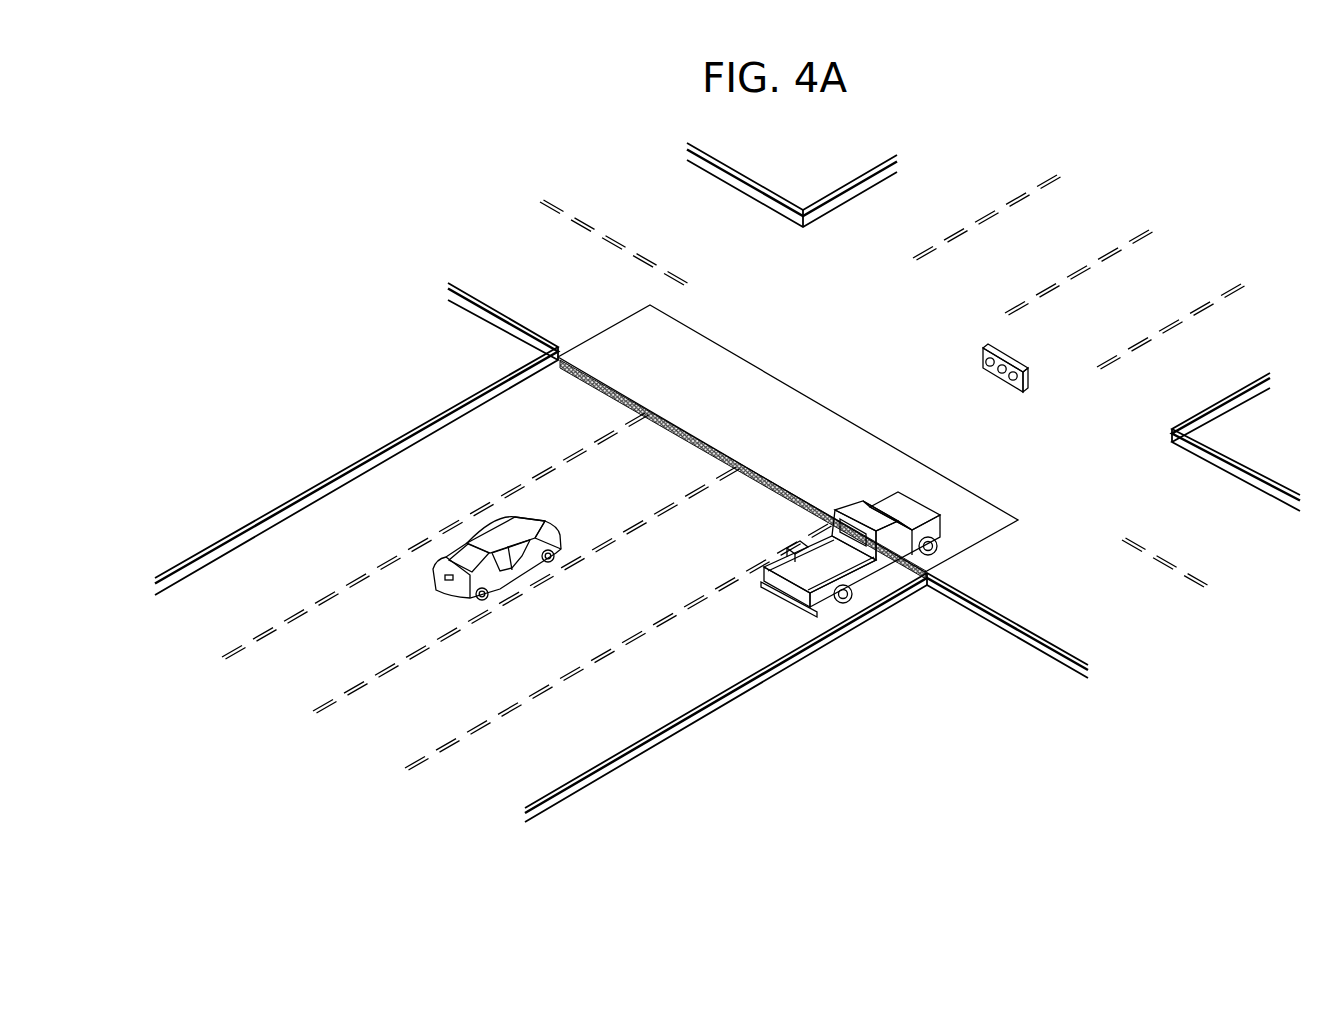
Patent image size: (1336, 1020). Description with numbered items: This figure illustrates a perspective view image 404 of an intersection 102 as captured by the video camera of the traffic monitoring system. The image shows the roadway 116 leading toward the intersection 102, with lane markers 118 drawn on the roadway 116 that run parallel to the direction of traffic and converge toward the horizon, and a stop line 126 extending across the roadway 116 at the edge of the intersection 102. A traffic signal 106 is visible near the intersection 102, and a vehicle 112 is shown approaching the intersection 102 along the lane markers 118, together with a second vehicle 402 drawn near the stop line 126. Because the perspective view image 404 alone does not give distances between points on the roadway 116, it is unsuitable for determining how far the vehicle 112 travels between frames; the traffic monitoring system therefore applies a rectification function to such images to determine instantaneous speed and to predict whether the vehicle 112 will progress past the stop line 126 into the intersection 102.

The intersection 102 is at (1024, 493).
The traffic signal 106 is at (1013, 358).
The vehicle 112 is at (560, 520).
The roadway 116 is at (677, 691).
The lane markers 118 is at (352, 581).
The stop line 126 is at (764, 474).
The second vehicle (truck) 402 is at (778, 602).
The perspective view image 404 is at (1112, 158).